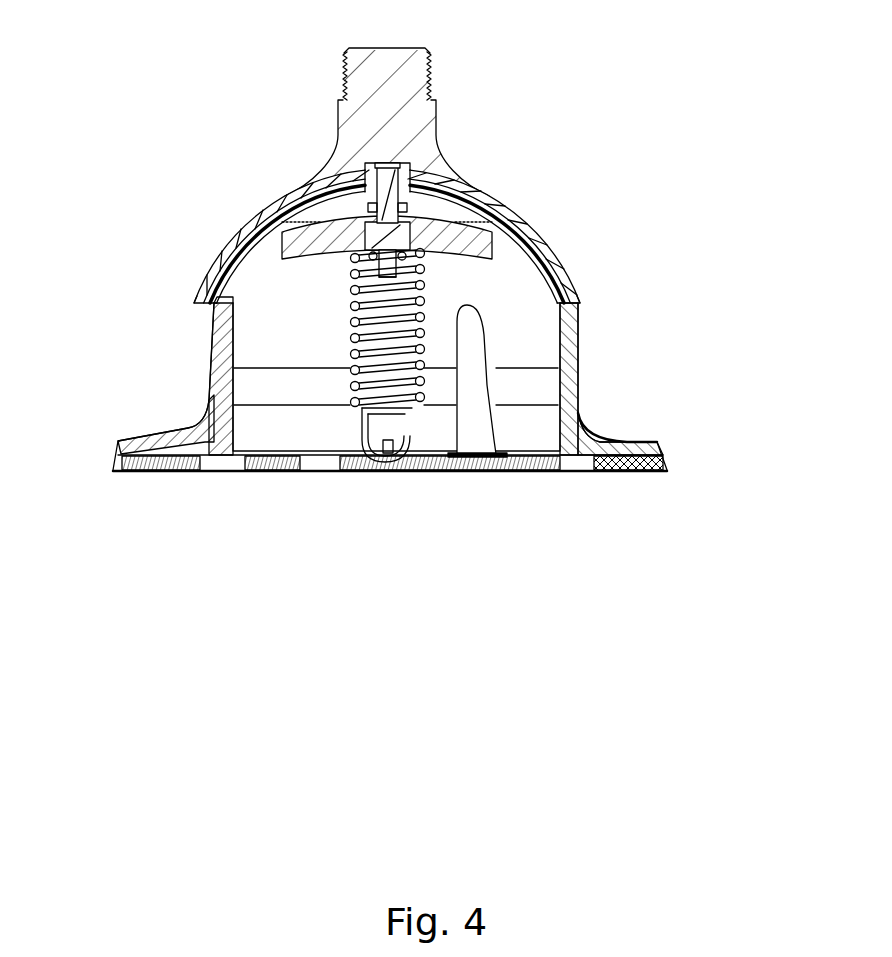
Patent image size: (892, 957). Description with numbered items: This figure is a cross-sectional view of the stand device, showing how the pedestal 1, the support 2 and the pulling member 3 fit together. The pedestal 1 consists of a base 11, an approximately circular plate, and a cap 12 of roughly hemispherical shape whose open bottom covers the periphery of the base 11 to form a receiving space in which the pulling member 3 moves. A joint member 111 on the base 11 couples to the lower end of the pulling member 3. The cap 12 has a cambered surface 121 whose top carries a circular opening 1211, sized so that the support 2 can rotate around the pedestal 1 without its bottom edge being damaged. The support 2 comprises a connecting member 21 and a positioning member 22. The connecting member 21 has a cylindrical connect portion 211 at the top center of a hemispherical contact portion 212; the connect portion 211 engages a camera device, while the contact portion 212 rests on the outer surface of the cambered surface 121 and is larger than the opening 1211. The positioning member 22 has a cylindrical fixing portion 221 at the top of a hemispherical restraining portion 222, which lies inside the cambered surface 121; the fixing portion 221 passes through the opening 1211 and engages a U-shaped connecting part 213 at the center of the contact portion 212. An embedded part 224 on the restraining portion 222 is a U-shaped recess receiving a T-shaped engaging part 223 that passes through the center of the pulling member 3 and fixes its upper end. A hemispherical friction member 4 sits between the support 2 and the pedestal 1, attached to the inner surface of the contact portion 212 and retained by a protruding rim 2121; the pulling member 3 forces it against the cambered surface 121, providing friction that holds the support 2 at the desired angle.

The pedestal 1 is at (761, 558).
The base 11 is at (422, 513).
The joint member 111 is at (390, 447).
The cap 12 is at (424, 292).
The cambered surface 121 is at (567, 365).
The opening 1211 is at (277, 200).
The support 2 is at (690, 296).
The connecting member 21 is at (471, 106).
The connect portion 211 is at (385, 65).
The contact portion 212 is at (432, 236).
The protruding rim 2121 is at (577, 298).
The connecting part 213 is at (403, 190).
The positioning member 22 is at (262, 210).
The fixing portion 221 is at (445, 190).
The restraining portion 222 is at (452, 223).
The engaging part 223 is at (395, 258).
The embedded part 224 is at (380, 227).
The pulling member 3 is at (350, 357).
The friction member 4 is at (252, 237).